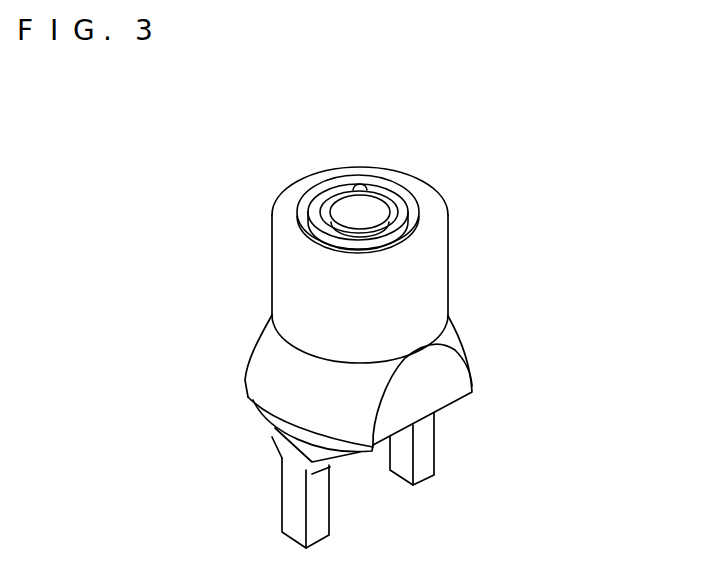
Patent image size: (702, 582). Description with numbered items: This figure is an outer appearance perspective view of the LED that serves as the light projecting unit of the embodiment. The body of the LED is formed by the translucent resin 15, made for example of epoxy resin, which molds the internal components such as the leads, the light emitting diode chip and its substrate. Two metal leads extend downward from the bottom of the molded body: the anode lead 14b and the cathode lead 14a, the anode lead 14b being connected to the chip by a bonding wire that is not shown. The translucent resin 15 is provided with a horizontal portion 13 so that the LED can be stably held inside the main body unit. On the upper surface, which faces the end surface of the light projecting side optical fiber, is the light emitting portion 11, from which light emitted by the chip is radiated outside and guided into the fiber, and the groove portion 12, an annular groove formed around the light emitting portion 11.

The light emitting portion 11 is at (370, 212).
The groove portion 12 is at (408, 215).
The horizontal portion 13 is at (423, 378).
The cathode lead 14a is at (433, 462).
The anode lead 14b is at (302, 503).
The translucent resin 15 is at (425, 292).